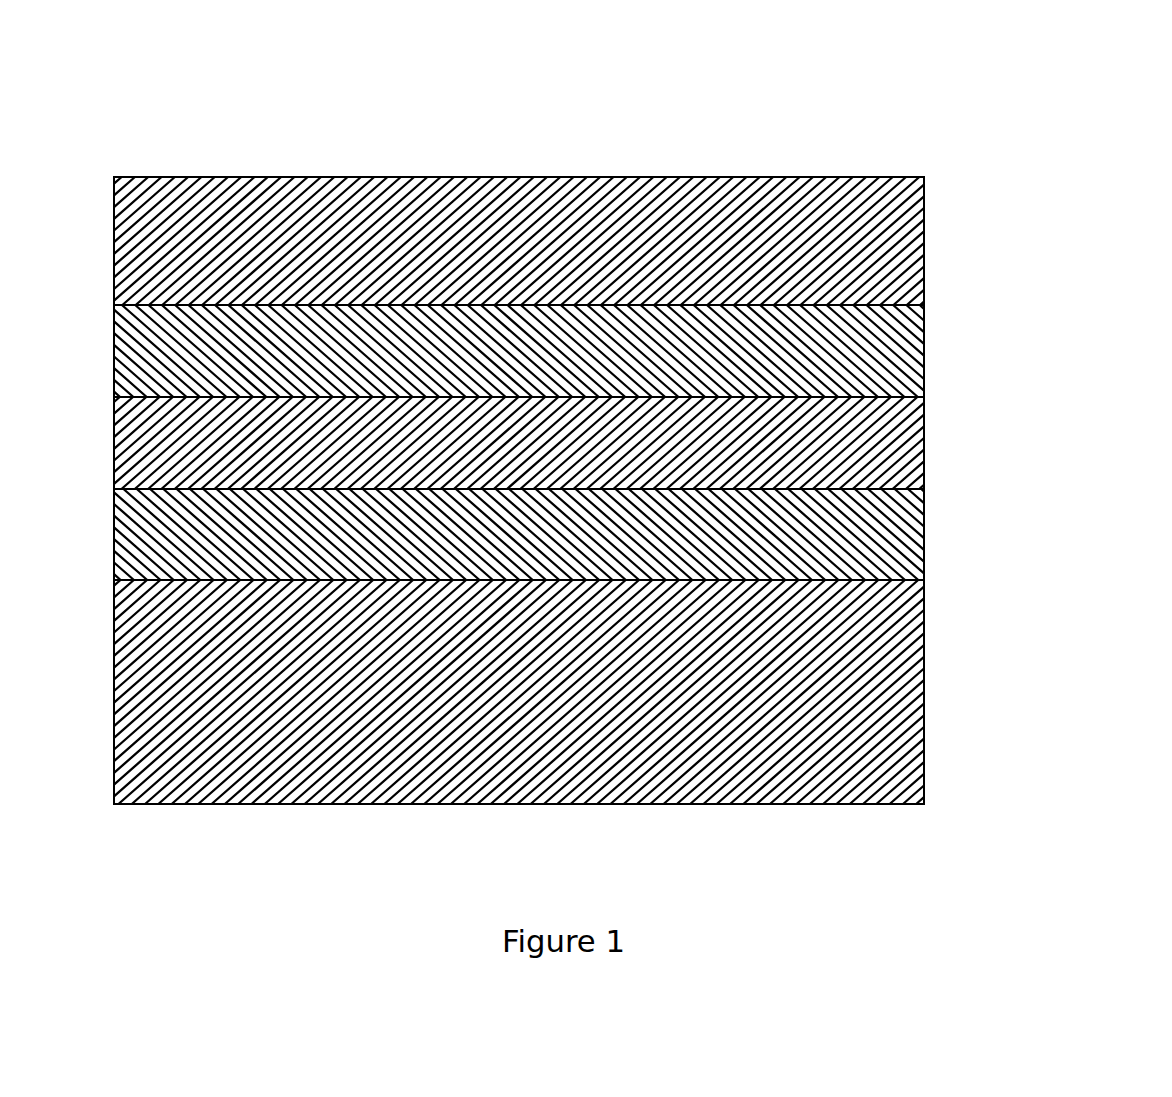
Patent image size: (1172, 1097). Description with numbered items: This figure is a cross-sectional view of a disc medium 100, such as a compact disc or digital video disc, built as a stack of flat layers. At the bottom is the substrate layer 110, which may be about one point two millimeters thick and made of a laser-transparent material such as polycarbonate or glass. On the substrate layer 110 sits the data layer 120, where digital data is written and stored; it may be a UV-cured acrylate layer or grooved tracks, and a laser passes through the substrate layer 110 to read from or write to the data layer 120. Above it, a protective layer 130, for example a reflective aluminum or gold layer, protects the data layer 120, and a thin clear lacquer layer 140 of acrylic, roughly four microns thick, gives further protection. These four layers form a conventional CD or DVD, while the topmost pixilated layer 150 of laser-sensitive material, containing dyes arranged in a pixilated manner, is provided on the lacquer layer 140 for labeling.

The medium 100 is at (629, 425).
The substrate layer 110 is at (924, 681).
The data layer 120 is at (924, 524).
The protective layer 130 is at (924, 437).
The lacquer layer 140 is at (924, 333).
The pixilated layer 150 is at (924, 230).